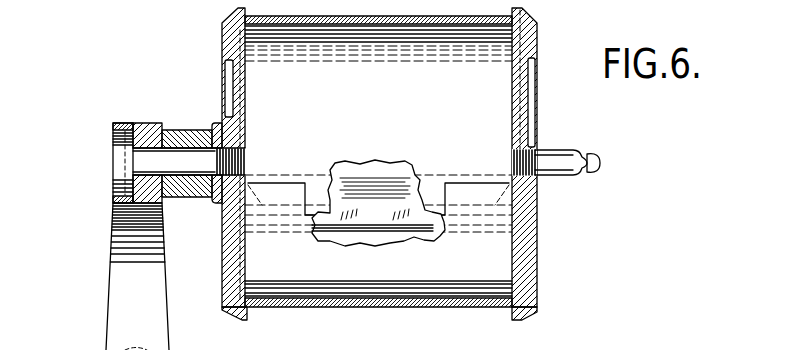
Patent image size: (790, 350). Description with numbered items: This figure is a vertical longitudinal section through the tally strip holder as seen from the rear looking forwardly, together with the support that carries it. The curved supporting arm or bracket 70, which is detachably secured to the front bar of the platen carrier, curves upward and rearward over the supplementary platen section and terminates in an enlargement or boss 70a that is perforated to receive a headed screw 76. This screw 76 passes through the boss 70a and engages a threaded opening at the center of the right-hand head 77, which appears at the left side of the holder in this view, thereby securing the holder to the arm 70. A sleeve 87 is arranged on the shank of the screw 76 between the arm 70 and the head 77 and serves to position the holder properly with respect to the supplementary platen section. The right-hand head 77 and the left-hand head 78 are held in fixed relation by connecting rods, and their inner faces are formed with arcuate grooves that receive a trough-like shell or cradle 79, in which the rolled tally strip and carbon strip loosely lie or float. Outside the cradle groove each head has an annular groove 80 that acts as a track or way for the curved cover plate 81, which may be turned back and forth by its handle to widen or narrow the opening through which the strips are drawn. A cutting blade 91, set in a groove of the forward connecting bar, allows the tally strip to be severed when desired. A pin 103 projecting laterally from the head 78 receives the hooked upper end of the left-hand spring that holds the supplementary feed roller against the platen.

The supporting arm or bracket 70 is at (163, 305).
The enlargement or boss 70a is at (128, 123).
The headed screw 76 is at (189, 162).
The right-hand head 77 is at (243, 113).
The left-hand head 78 is at (513, 91).
The trough-like shell or cradle 79 is at (357, 307).
The annular groove 80 is at (247, 312).
The curved cover plate 81 is at (352, 24).
The sleeve 87 is at (183, 198).
The cutting blade 91 is at (283, 178).
The pin 103 is at (558, 176).